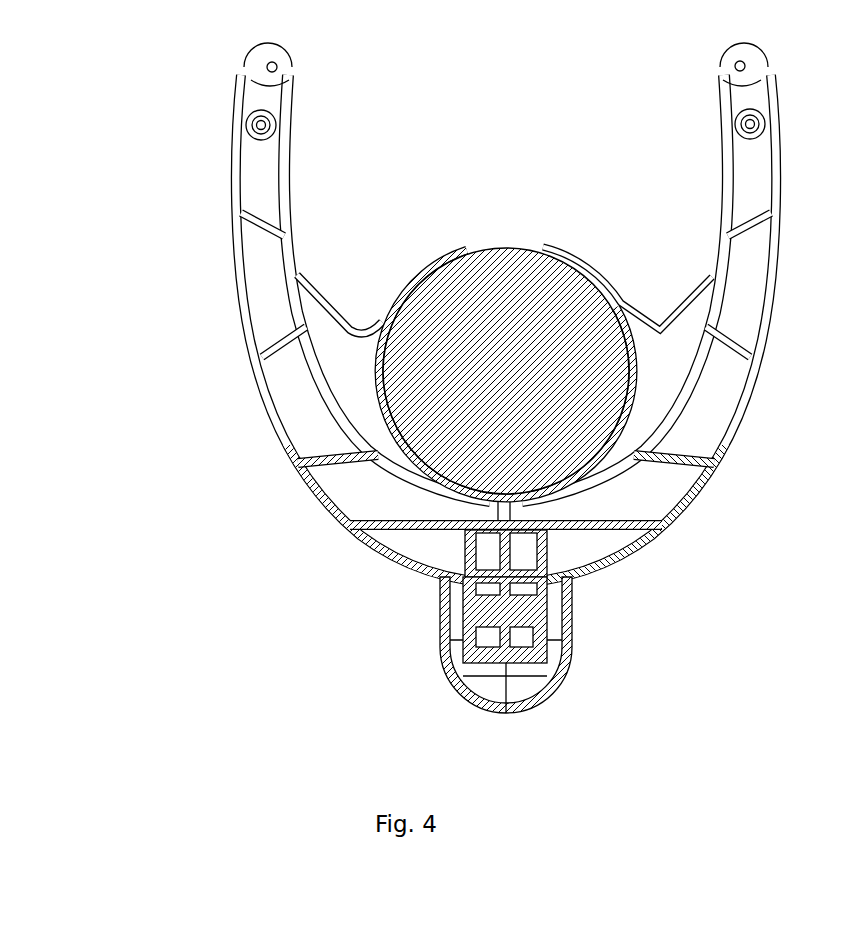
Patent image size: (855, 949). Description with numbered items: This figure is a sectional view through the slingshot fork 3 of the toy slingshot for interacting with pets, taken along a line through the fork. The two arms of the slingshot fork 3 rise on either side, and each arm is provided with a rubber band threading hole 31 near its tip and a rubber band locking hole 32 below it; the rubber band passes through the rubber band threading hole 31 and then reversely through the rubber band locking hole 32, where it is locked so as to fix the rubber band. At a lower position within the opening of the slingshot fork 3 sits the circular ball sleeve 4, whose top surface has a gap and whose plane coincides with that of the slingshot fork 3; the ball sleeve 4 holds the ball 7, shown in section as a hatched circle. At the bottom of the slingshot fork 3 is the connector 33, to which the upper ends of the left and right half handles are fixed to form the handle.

The slingshot fork 3 is at (262, 283).
The rubber band threading hole 31 is at (267, 68).
The rubber band locking hole 32 is at (258, 128).
The ball sleeve 4 is at (382, 337).
The ball 7 is at (445, 388).
The connector 33 is at (500, 703).